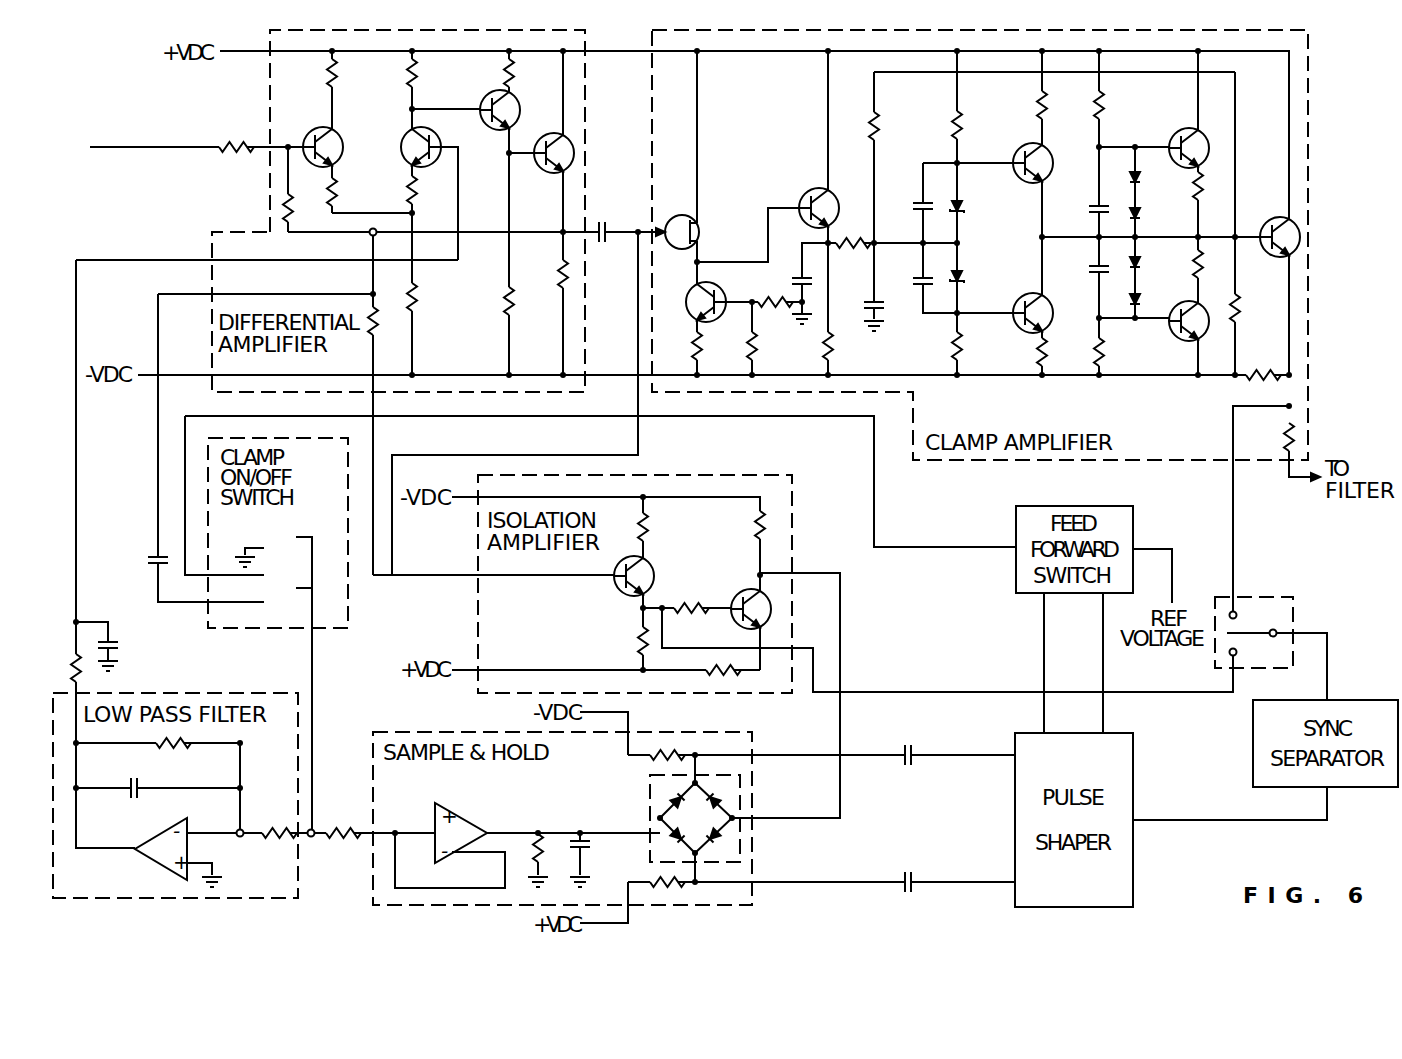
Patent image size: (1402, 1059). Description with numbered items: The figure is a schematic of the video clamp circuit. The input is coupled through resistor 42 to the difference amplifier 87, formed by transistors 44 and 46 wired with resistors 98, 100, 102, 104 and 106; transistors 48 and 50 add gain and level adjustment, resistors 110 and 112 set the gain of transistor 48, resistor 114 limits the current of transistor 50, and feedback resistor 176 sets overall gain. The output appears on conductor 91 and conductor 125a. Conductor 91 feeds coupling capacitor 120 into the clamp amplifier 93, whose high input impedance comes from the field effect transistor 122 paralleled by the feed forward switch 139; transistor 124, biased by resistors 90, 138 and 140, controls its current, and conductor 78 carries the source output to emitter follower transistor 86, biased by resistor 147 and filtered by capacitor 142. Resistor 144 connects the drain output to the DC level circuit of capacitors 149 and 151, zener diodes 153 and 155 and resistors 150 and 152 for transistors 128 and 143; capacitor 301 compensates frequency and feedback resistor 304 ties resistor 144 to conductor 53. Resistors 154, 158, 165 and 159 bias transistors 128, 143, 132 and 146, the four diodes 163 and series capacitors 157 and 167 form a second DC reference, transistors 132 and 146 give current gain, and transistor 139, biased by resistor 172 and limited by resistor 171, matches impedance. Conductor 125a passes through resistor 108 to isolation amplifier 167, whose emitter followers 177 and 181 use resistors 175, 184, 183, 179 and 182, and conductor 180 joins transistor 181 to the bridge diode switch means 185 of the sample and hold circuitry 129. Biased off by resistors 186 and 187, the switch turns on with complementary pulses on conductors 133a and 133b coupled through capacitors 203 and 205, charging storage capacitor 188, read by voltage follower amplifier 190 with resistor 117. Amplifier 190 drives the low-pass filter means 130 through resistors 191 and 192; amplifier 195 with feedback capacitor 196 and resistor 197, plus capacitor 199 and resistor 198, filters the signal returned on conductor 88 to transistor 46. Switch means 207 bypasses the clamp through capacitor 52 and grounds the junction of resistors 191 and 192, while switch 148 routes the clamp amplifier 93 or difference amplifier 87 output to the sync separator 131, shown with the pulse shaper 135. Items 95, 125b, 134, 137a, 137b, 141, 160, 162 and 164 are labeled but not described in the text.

The resistor 42 is at (234, 145).
The transistor 44 is at (340, 134).
The transistor 46 is at (401, 150).
The transistor 48 is at (492, 128).
The transistor 50 is at (549, 172).
The capacitor 52 is at (148, 561).
The conductor 53 is at (1240, 110).
The conductor 78 is at (768, 262).
The transistor 86 is at (802, 198).
The difference amplifier 87 is at (588, 108).
The conductor 88 is at (78, 528).
The resistor 90 is at (775, 308).
The conductor 91 is at (580, 228).
The clamp amplifier 93 is at (935, 462).
The line 95 is at (1288, 322).
The resistor 98 is at (337, 77).
The resistor 100 is at (337, 190).
The resistor 102 is at (417, 77).
The resistor 104 is at (417, 195).
The resistor 106 is at (417, 297).
The current limiting resistor 108 is at (370, 330).
The resistor 110 is at (514, 302).
The resistor 112 is at (514, 77).
The resistor 114 is at (558, 275).
The resistor 117 is at (534, 850).
The coupling capacitor 120 is at (602, 224).
The field effect transistor 122 is at (704, 222).
The transistor 124 is at (728, 298).
The conductor 125a is at (392, 455).
The line 125b is at (880, 692).
The transistor 128 is at (1016, 157).
The sample and hold circuitry 129 is at (380, 732).
The low-pass filter means 130 is at (300, 882).
The sync separator 131 is at (1335, 700).
The transistor 132 is at (1168, 142).
The conductor 133a is at (965, 758).
The conductor 133b is at (962, 880).
The line 134 is at (1330, 818).
The pulse shaper 135 is at (1133, 858).
The line 137a is at (1043, 662).
The line 137b is at (1104, 665).
The resistor 138 is at (692, 345).
The feed forward switch 139 is at (1271, 218).
The resistor 140 is at (750, 345).
The line 141 is at (873, 510).
The capacitor 142 is at (806, 276).
The transistor 143 is at (1050, 300).
The resistor 144 is at (850, 250).
The transistor 146 is at (1168, 326).
The resistor 147 is at (833, 345).
The switch 148 is at (1256, 597).
The capacitor 149 is at (920, 200).
The resistor 150 is at (963, 126).
The capacitor 151 is at (936, 268).
The resistor 152 is at (952, 348).
The zener diode 153 is at (966, 208).
The resistor 154 is at (1038, 110).
The zener diode 155 is at (966, 278).
The series capacitor 157 is at (1093, 204).
The resistor 158 is at (1038, 352).
The bias resistor 159 is at (1104, 352).
The resistor 160 is at (1193, 190).
The resistor 162 is at (1193, 266).
The diode 163 is at (1140, 180).
The resistor 164 is at (1262, 371).
The resistor 165 is at (1104, 106).
The isolation amplifier 167 is at (1093, 266).
The resistor 171 is at (1287, 436).
The resistor 172 is at (1240, 298).
The resistor 175 is at (647, 526).
The feedback resistor 176 is at (292, 210).
The transistor 177 is at (613, 590).
The resistor 179 is at (756, 528).
The conductor 180 is at (842, 727).
The transistor 181 is at (734, 624).
The resistor 182 is at (712, 669).
The resistor 183 is at (690, 604).
The resistor 184 is at (640, 641).
The bridge type diode switch means 185 is at (650, 815).
The resistor 186 is at (660, 760).
The resistor 187 is at (682, 884).
The storage capacitor 188 is at (590, 846).
The voltage follower amplifier 190 is at (446, 822).
The resistor 191 is at (340, 828).
The resistor 192 is at (275, 828).
The amplifier 195 is at (146, 840).
The capacitor 196 is at (128, 784).
The resistor 197 is at (172, 748).
The resistor 198 is at (72, 665).
The capacitor 199 is at (116, 648).
The capacitor 203 is at (918, 752).
The capacitor 205 is at (900, 878).
The switch means 207 is at (348, 622).
The capacitor 301 is at (880, 314).
The feedback resistor 304 is at (880, 126).